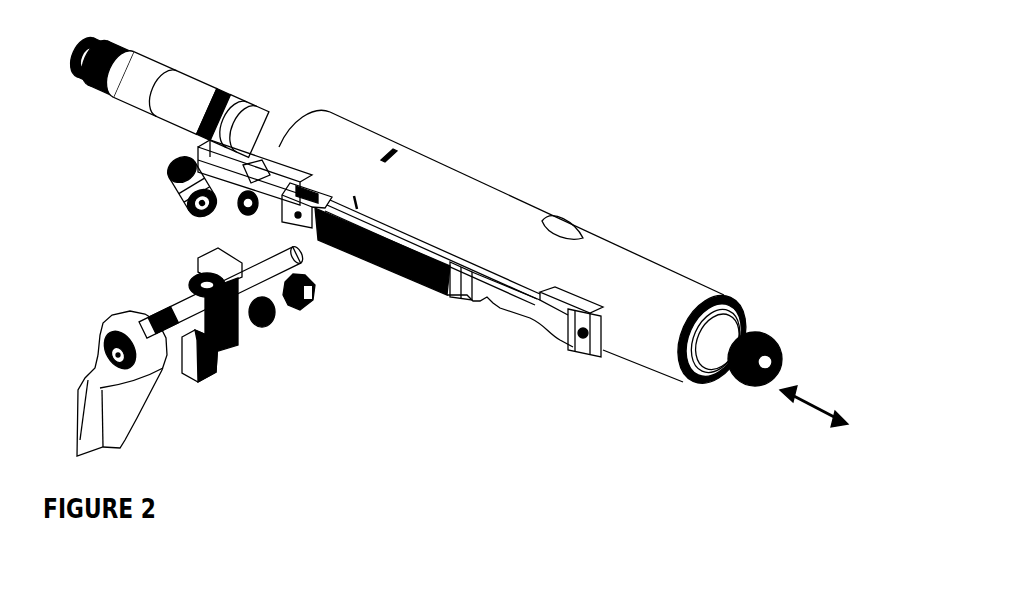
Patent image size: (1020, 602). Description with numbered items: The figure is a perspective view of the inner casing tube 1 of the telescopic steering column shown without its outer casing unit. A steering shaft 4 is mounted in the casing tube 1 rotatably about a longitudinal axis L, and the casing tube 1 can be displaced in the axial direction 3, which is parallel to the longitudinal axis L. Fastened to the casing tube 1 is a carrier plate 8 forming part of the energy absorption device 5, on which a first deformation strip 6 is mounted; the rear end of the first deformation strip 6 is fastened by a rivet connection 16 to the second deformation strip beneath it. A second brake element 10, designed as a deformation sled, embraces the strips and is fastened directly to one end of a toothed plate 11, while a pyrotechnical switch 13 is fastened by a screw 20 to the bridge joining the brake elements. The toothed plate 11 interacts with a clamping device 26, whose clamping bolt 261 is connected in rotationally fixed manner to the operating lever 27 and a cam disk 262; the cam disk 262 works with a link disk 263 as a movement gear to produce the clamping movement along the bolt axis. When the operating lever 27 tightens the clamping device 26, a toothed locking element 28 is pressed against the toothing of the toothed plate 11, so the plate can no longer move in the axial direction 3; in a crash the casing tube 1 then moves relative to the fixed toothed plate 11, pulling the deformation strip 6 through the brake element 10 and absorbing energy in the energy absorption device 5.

The inner casing tube 1 is at (652, 290).
The axial direction 3 is at (813, 404).
The steering shaft 4 is at (192, 98).
The energy absorption device 5 is at (467, 308).
The first deformation strip 6 is at (473, 277).
The carrier plate 8 is at (248, 167).
The second brake element 10 is at (310, 190).
The toothed plate 11 is at (390, 273).
The pyrotechnical switch 13 is at (196, 210).
The rivet connection 16 is at (583, 340).
The screw 20 is at (263, 177).
The clamping device 26 is at (245, 370).
The operating lever 27 is at (115, 418).
The locking element 28 is at (316, 303).
The clamping bolt 261 is at (193, 370).
The cam disk 262 is at (140, 310).
The link disk 263 is at (193, 283).
The longitudinal axis L is at (817, 387).